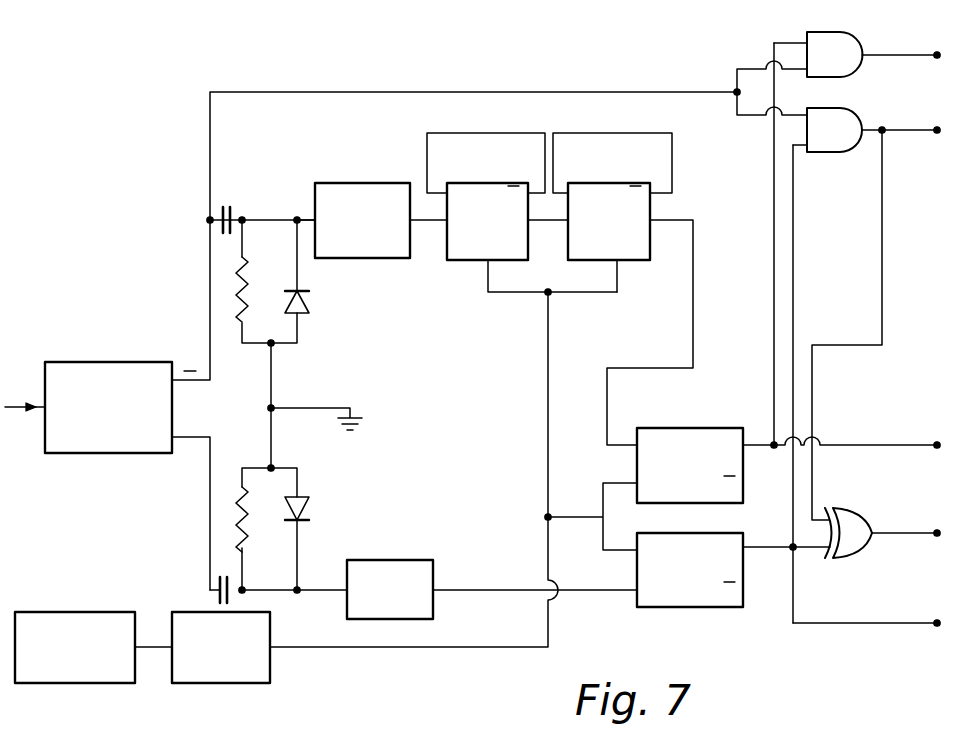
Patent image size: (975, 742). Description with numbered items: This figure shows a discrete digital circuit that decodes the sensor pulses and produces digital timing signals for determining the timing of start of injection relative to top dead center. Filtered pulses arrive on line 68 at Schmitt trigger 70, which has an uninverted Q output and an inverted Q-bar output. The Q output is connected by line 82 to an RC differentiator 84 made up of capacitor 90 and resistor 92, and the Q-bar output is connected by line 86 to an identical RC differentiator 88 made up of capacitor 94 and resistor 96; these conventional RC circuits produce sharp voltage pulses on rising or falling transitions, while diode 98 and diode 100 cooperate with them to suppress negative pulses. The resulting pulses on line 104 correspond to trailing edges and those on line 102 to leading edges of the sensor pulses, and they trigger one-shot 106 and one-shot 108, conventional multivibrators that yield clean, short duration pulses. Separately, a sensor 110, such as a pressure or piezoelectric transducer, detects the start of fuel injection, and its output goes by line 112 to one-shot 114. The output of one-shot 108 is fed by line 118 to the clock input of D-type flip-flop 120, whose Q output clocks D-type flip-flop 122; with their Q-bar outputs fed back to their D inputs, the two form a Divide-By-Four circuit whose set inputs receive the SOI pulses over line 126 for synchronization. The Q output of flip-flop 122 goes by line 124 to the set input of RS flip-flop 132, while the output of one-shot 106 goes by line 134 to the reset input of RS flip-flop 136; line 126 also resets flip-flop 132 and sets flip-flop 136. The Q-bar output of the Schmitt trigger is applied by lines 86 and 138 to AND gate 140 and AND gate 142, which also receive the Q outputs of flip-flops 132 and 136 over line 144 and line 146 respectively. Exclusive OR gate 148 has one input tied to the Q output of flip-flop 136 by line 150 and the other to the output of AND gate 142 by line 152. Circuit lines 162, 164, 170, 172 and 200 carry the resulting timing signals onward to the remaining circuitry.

The line 68 is at (14, 405).
The Schmitt trigger 70 is at (120, 367).
The line 82 is at (210, 485).
The RC differentiator 84 is at (185, 539).
The line 86 is at (210, 375).
The RC differentiator 88 is at (200, 262).
The capacitor 90 is at (216, 598).
The resistor 92 is at (248, 518).
The capacitor 94 is at (232, 212).
The resistor 96 is at (248, 298).
The diode 98 is at (310, 502).
The diode 100 is at (309, 306).
The line 102 is at (302, 212).
The line 104 is at (320, 590).
The one-shot 106 is at (425, 608).
The one-shot 108 is at (365, 182).
The sensor 110 is at (100, 672).
The line 112 is at (157, 647).
The one-shot 114 is at (222, 672).
The line 118 is at (432, 222).
The D-type flip-flop 120 is at (465, 262).
The D-type flip-flop 122 is at (638, 262).
The line 124 is at (700, 262).
The line 126 is at (548, 408).
The RS flip-flop 132 is at (698, 443).
The line 134 is at (480, 590).
The RS flip-flop 136 is at (697, 593).
The line 138 is at (228, 92).
The AND gate 140 is at (824, 42).
The AND gate 142 is at (828, 143).
The line 144 is at (774, 278).
The line 146 is at (793, 305).
The exclusive OR gate 148 is at (850, 520).
The line 150 is at (815, 550).
The line 152 is at (855, 345).
The circuit line 162 is at (852, 446).
The circuit line 164 is at (832, 625).
The circuit line 170 is at (875, 57).
The circuit line 172 is at (895, 535).
The circuit line 200 is at (917, 133).